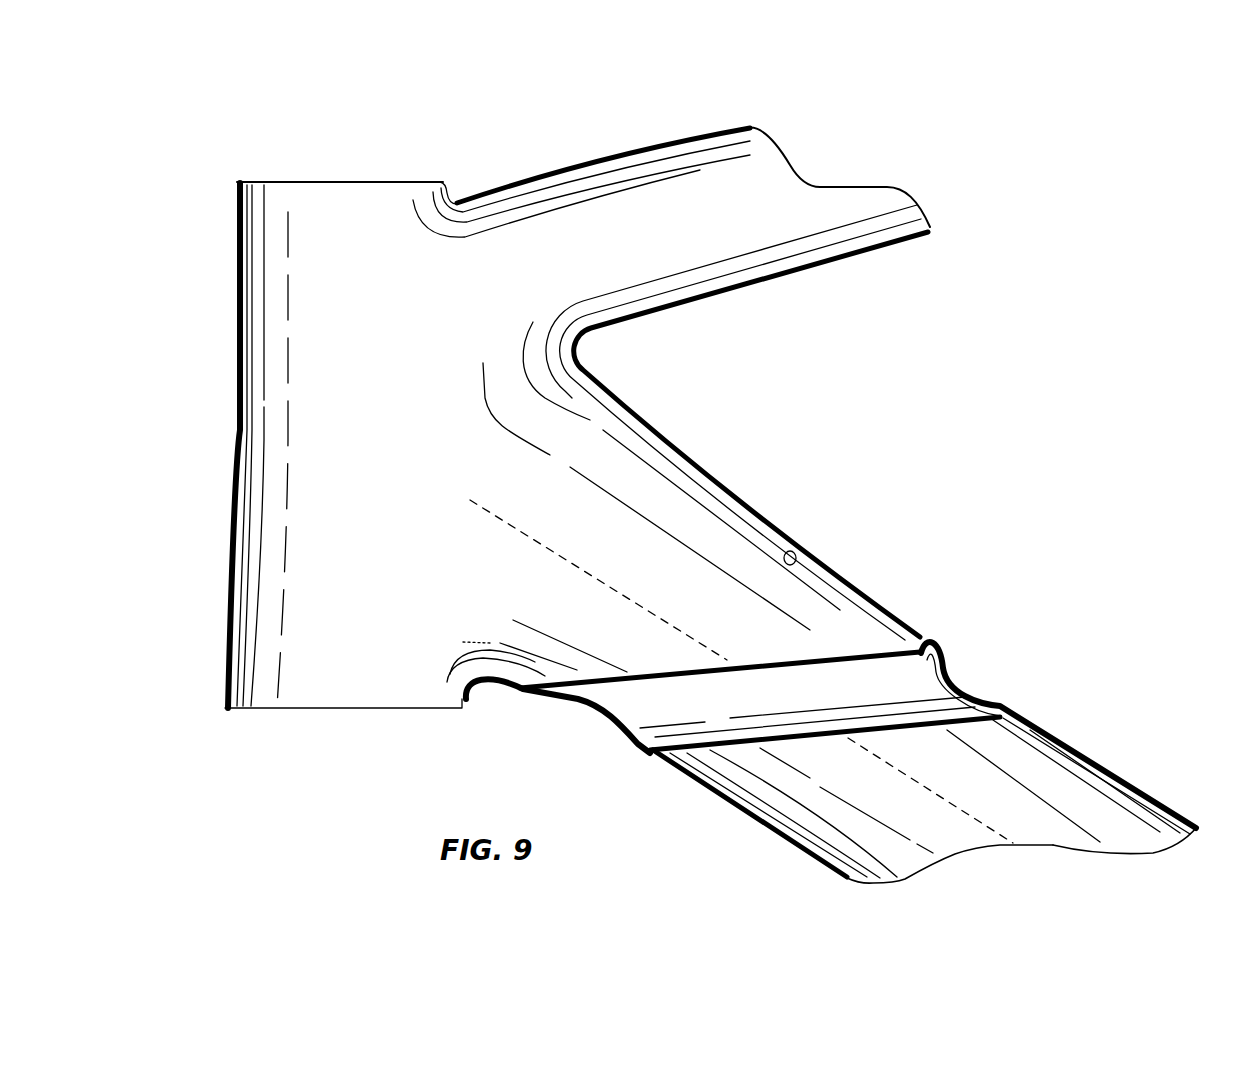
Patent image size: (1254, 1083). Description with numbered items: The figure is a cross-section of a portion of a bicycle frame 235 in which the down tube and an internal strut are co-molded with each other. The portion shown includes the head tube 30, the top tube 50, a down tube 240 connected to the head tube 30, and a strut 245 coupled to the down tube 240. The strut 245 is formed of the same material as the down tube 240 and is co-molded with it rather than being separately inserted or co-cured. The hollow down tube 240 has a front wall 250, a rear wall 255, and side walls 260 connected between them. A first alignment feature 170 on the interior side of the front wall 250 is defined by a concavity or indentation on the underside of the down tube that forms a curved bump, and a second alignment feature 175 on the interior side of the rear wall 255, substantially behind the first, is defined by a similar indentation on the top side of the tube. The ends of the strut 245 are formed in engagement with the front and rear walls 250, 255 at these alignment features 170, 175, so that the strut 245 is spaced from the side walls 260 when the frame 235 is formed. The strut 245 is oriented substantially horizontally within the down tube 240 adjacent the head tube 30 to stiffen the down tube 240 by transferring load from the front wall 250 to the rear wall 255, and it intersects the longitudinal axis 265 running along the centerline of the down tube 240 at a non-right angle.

The bicycle frame 235 is at (209, 98).
The head tube 30 is at (237, 414).
The top tube 50 is at (562, 172).
The down tube 240 is at (727, 494).
The rear wall 255 is at (802, 557).
The strut 245 is at (838, 653).
The second alignment feature 175 is at (957, 688).
The first alignment feature 170 is at (623, 713).
The front wall 250 is at (737, 792).
The side walls 260 is at (963, 851).
The longitudinal axis 265 is at (1030, 858).